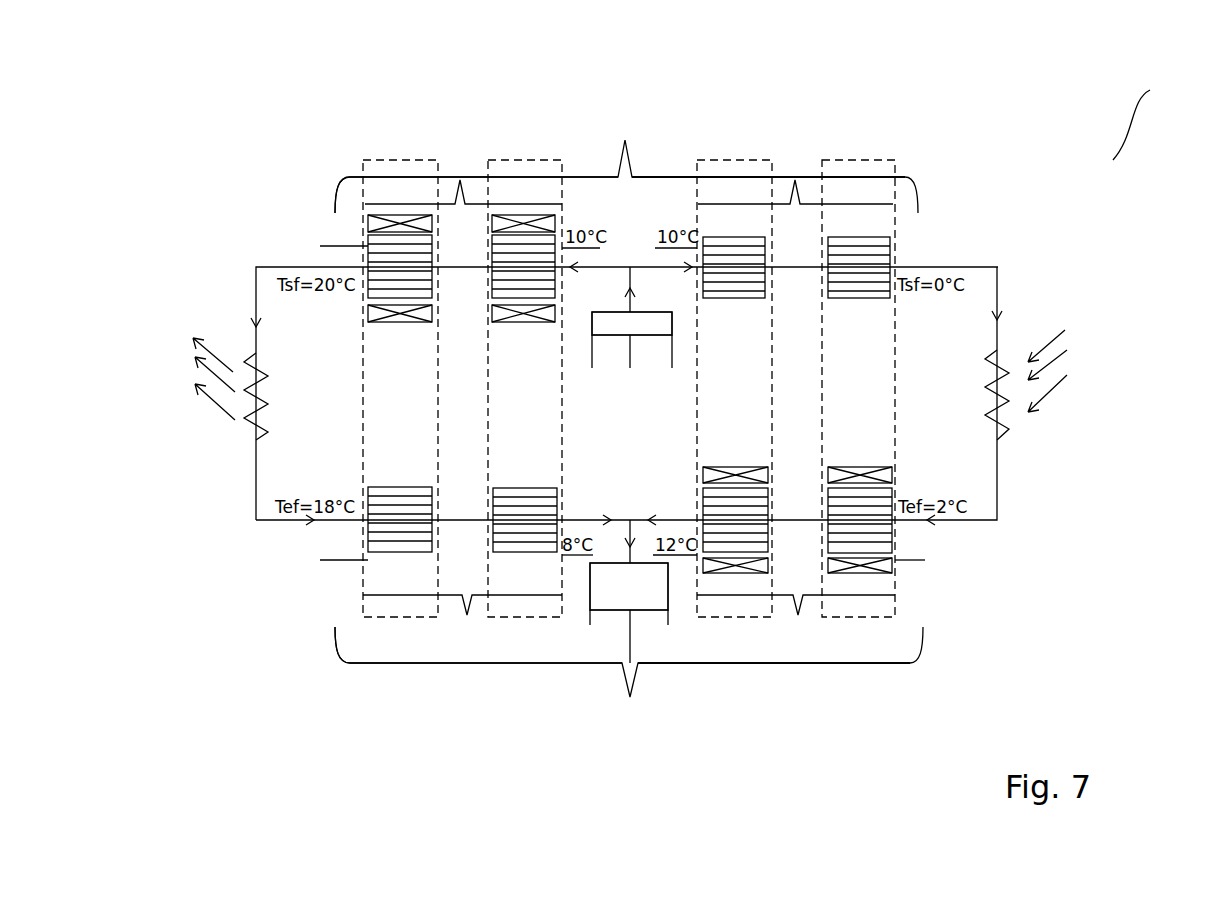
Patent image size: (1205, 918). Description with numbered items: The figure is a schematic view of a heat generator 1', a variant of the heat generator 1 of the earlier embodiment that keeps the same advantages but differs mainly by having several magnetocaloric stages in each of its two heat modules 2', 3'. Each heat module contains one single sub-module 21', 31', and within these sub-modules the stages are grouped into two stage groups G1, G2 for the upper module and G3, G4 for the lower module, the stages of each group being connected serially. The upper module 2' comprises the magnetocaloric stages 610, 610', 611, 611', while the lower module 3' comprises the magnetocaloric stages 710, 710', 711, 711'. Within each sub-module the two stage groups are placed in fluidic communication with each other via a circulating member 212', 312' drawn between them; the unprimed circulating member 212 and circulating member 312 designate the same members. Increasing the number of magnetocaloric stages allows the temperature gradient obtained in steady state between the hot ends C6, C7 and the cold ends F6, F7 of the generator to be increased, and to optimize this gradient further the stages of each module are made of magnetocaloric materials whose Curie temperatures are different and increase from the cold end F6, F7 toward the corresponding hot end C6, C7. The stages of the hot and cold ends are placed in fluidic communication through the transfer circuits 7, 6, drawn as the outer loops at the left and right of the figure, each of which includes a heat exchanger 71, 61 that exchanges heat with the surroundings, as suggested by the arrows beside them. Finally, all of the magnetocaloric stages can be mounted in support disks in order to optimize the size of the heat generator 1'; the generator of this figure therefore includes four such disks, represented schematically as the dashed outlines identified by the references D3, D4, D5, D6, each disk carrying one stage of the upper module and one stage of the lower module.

The heat generator 1' is at (1142, 109).
The heat generator 1 is at (1131, 125).
The heat module 2' is at (626, 164).
The sub-module 21' is at (476, 195).
The heat module 3' is at (629, 676).
The sub-module 31' is at (478, 645).
The transfer circuit 6 is at (1017, 293).
The heat exchanger 61 is at (1004, 437).
The transfer circuit 7 is at (242, 300).
The heat exchanger 71 is at (252, 434).
The circulating member 212' is at (676, 322).
The first heat carrier reservoir 212 is at (632, 323).
The circulating member 312' is at (673, 591).
The second heat carrier reservoir 312 is at (629, 586).
The magnetocaloric stage 610 is at (406, 305).
The magnetocaloric stage 610' is at (523, 305).
The magnetocaloric stage 611 is at (756, 301).
The magnetocaloric stage 611' is at (864, 301).
The magnetocaloric stage 710 is at (411, 497).
The magnetocaloric stage 710' is at (534, 497).
The magnetocaloric stage 711 is at (739, 501).
The magnetocaloric stage 711' is at (863, 500).
The hot end C6 is at (368, 258).
The hot end C7 is at (368, 530).
The cold end F6 is at (893, 253).
The cold end F7 is at (895, 530).
The disk D3 is at (385, 160).
The disk D4 is at (520, 160).
The disk D5 is at (741, 160).
The disk D6 is at (856, 160).
The stage group G1 is at (463, 178).
The stage group G2 is at (795, 178).
The stage group G3 is at (462, 620).
The stage group G4 is at (796, 621).